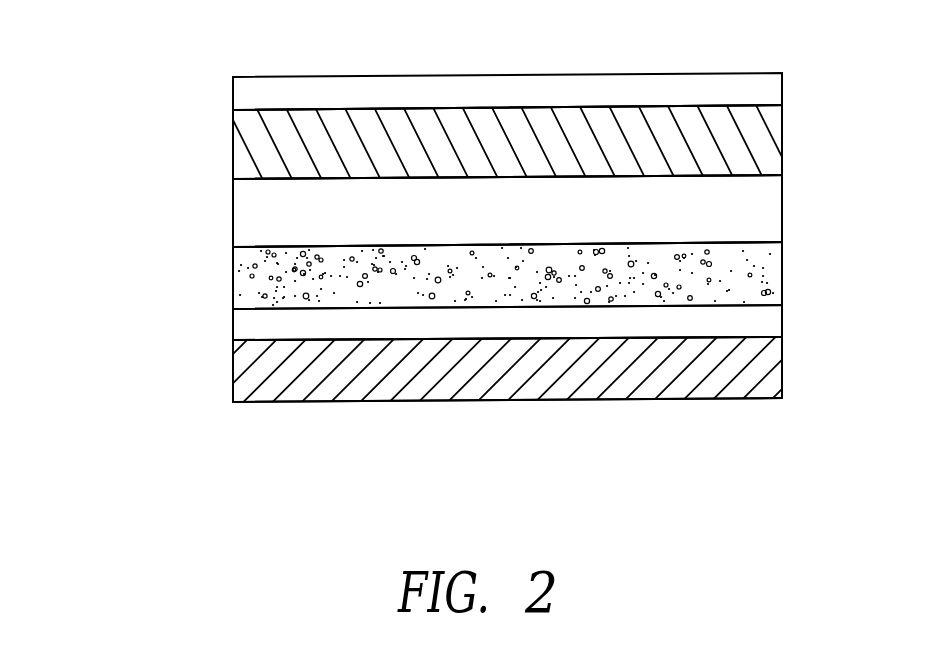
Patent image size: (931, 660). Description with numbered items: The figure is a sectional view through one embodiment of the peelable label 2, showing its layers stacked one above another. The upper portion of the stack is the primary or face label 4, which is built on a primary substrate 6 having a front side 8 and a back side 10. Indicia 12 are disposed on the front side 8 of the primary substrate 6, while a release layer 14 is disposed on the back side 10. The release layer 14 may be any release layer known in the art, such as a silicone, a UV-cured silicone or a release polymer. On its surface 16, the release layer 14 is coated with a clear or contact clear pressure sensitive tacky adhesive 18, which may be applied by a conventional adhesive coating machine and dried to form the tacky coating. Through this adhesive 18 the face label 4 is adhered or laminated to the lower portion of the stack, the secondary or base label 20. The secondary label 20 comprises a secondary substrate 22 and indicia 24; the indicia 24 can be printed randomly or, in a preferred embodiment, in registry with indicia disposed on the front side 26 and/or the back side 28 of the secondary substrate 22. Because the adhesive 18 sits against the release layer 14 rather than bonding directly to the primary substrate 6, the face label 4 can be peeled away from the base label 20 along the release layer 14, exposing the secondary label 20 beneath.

The peelable label 2 is at (42, 175).
The primary or face label 4 is at (225, 80).
The primary substrate 6 is at (772, 138).
The front side 8 is at (349, 113).
The back side 10 is at (305, 178).
The indicia 12 is at (693, 87).
The release layer 14 is at (760, 213).
The surface 16 is at (591, 245).
The pressure sensitive tacky adhesive 18 is at (770, 273).
The secondary or base label 20 is at (223, 247).
The secondary substrate 22 is at (767, 360).
The indicia 24 is at (770, 318).
The front side 26 is at (432, 340).
The back side 28 is at (522, 397).